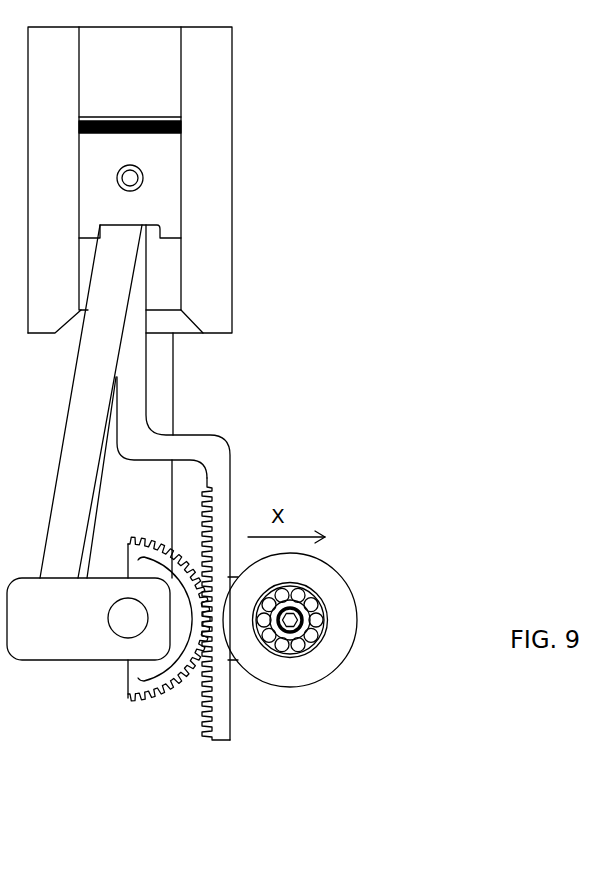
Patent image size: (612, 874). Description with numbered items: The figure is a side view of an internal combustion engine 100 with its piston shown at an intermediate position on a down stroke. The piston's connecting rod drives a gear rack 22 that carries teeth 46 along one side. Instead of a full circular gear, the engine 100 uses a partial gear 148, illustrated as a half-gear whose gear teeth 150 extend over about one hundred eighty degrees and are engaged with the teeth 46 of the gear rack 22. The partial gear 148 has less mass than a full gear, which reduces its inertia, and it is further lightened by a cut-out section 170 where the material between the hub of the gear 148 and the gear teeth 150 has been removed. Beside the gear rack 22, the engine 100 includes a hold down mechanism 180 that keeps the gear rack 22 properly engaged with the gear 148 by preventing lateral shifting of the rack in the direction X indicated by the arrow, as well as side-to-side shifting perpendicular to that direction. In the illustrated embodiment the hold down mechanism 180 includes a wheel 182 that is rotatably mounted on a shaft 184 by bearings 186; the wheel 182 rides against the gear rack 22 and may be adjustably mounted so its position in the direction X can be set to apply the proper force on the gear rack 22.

The internal combustion engine 100 is at (332, 347).
The gear rack 22 is at (229, 473).
The teeth 46 is at (208, 732).
The partial gear 148 is at (137, 685).
The gear teeth 150 is at (143, 540).
The cut-out section 170 is at (160, 683).
The hold down mechanism 180 is at (343, 590).
The wheel 182 is at (318, 663).
The shaft 184 is at (287, 635).
The bearings 186 is at (330, 628).